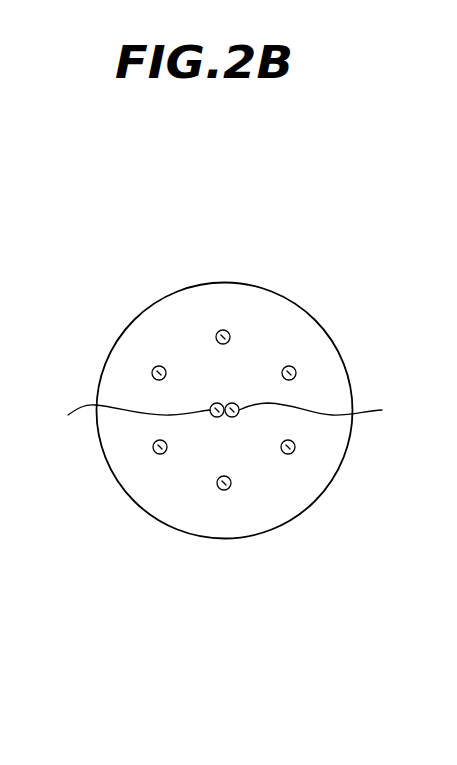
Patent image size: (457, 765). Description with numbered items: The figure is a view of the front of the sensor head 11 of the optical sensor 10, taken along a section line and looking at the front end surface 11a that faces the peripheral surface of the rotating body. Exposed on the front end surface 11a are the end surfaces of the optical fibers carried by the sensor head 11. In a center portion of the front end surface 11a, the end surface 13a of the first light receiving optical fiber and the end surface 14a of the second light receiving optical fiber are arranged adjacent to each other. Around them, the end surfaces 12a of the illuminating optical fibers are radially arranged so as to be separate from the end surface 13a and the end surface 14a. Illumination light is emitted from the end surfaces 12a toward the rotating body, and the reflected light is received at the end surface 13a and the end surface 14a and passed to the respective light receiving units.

The optical sensor 10 is at (225, 423).
The sensor head 11 is at (314, 284).
The front end surface 11a is at (177, 326).
The end surfaces 12a is at (221, 330).
The end surface 13a is at (331, 408).
The end surface 14a is at (118, 414).